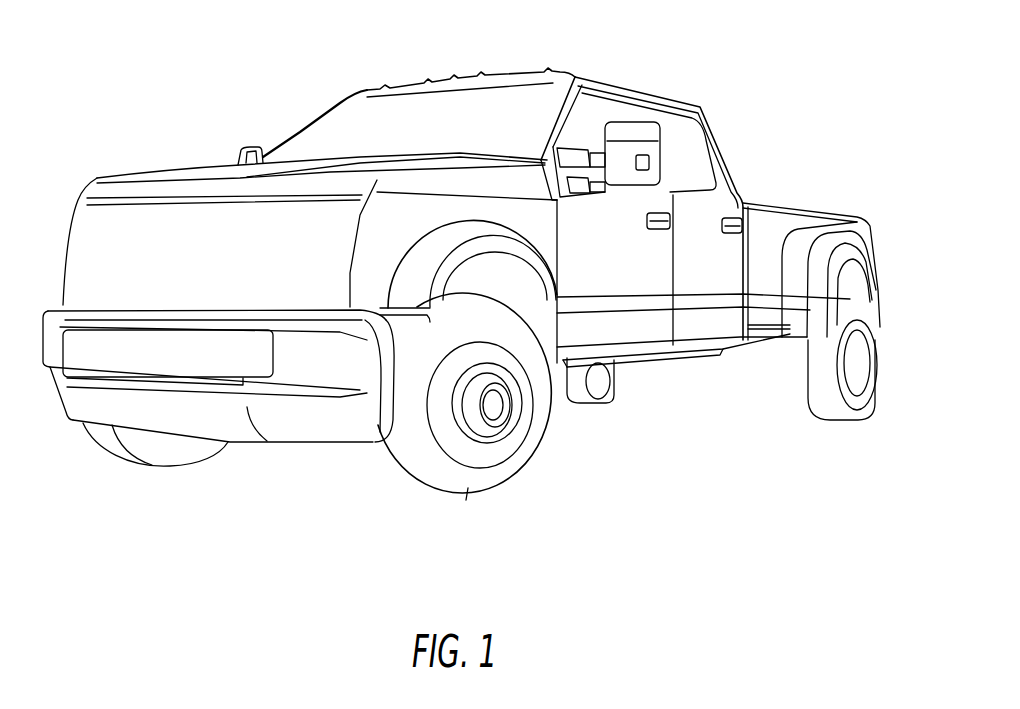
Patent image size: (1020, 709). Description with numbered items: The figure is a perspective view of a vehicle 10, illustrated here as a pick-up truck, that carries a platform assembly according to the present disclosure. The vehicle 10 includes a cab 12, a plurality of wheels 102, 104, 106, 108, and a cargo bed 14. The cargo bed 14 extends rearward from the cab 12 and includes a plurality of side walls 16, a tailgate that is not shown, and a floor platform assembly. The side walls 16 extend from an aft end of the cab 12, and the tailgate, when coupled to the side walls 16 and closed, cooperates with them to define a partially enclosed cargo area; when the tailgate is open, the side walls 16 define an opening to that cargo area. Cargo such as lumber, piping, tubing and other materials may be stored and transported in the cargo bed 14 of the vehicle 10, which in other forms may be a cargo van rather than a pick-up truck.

The vehicle 10 is at (446, 255).
The cab 12 is at (627, 117).
The cargo bed 14 is at (776, 212).
The side walls 16 is at (793, 240).
The wheel 102 is at (470, 487).
The wheel 104 is at (192, 452).
The wheel 106 is at (830, 407).
The wheel 108 is at (592, 400).